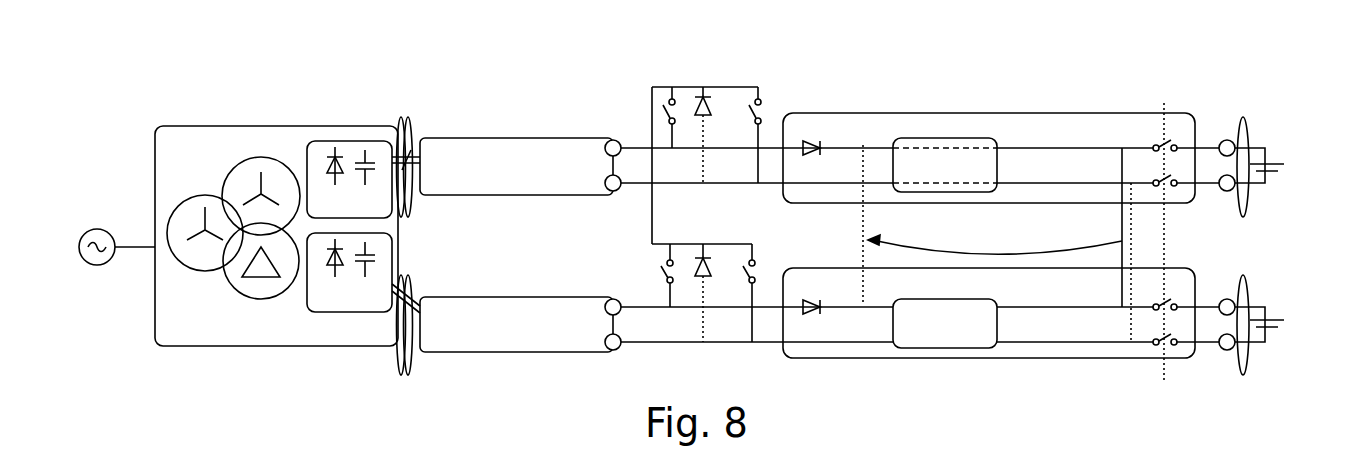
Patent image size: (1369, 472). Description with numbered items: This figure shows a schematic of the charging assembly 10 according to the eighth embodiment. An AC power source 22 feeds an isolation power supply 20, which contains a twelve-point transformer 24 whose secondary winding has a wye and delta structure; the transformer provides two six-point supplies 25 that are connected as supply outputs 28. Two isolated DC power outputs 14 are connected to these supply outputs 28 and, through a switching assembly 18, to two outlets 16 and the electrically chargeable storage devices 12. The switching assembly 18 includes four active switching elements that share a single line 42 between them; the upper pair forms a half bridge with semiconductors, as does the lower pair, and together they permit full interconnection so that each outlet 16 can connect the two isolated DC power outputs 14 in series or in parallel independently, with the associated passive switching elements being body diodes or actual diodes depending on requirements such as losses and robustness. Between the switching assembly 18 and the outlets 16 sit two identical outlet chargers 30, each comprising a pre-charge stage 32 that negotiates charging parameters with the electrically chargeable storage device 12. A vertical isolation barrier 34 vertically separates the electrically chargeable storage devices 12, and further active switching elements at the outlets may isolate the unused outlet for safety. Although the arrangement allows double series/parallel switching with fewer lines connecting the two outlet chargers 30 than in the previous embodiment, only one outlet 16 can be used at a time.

The charging assembly 10 is at (603, 100).
The electrically chargeable storage device 12 is at (1283, 164).
The isolated DC power output 14 is at (503, 138).
The outlet 16 is at (1243, 117).
The switching assembly 18 is at (728, 68).
The isolation power supply 20 is at (212, 110).
The AC power source 22 is at (90, 267).
The twelve-point transformer 24 is at (240, 258).
The six-point supply 25 is at (337, 141).
The supply output 28 is at (407, 118).
The outlet charger 30 is at (1047, 112).
The pre-charge stage 32 is at (975, 138).
The vertical isolation barrier 34 is at (1163, 353).
The single line 42 is at (653, 250).